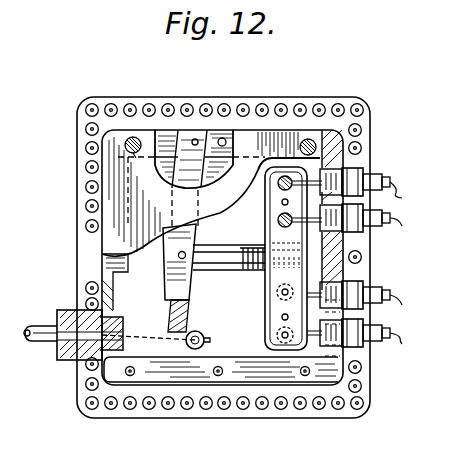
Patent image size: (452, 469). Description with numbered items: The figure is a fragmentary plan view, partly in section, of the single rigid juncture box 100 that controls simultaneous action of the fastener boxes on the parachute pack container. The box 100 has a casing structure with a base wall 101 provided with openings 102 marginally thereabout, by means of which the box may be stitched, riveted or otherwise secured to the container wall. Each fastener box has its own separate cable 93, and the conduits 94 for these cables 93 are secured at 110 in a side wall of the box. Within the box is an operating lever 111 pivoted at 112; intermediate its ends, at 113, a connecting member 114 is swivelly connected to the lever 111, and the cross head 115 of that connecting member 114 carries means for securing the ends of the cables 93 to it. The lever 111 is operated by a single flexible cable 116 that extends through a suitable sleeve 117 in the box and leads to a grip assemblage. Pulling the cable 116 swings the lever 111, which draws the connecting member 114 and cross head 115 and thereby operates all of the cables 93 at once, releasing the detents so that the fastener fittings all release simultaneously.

The juncture box 100 is at (338, 102).
The base wall 101 is at (279, 410).
The openings 102 is at (204, 410).
The conduit securing point 110 is at (362, 257).
The operating lever 111 is at (195, 271).
The pivot 112 is at (206, 131).
The swivel connection 113 is at (199, 242).
The connecting member 114 is at (229, 258).
The cross head 115 is at (270, 306).
The flexible cable 116 is at (28, 342).
The sleeve 117 is at (55, 326).
The cable 93 is at (392, 219).
The conduits 94 is at (383, 175).